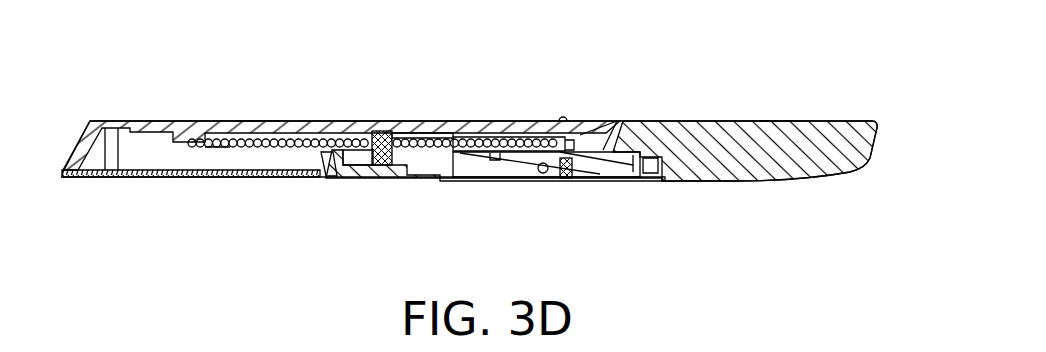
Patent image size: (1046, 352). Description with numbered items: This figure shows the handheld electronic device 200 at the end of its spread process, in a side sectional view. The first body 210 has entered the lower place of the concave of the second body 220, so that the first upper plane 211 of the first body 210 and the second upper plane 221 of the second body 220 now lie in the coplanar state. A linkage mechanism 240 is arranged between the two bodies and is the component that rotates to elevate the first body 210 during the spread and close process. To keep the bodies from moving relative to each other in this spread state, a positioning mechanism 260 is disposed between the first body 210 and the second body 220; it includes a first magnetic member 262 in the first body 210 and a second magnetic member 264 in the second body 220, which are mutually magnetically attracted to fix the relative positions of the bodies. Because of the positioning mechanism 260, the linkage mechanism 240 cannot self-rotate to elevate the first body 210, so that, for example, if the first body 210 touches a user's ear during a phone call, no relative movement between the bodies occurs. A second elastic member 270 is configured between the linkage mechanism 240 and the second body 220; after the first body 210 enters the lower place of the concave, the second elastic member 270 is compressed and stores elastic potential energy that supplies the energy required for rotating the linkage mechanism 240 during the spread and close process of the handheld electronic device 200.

The handheld electronic device 200 is at (880, 264).
The first body 210 is at (594, 120).
The first upper plane 211 is at (258, 121).
The second body 220 is at (752, 174).
The second upper plane 221 is at (780, 121).
The linkage mechanism 240 is at (508, 156).
The positioning mechanism 260 is at (352, 48).
The first magnetic member 262 is at (374, 130).
The second magnetic member 264 is at (390, 155).
The second elastic member 270 is at (567, 160).